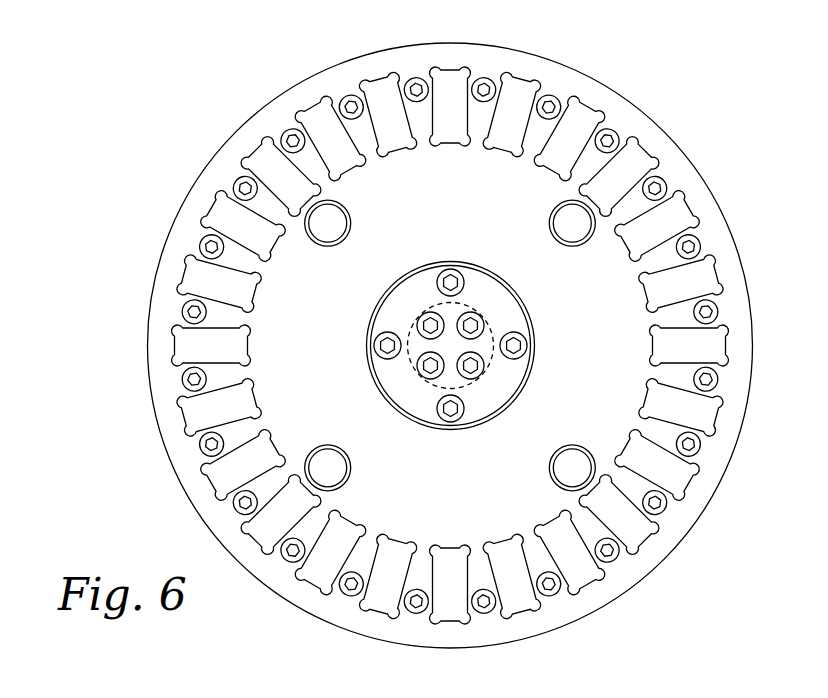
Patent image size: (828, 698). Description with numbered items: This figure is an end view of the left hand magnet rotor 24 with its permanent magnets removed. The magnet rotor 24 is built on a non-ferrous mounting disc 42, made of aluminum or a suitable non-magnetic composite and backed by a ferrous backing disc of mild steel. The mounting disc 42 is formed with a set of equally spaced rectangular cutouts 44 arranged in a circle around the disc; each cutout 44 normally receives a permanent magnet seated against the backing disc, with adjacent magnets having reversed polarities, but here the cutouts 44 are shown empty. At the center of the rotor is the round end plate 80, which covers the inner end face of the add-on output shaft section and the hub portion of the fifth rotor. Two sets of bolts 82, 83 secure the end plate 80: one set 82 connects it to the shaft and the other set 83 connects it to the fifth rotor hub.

The magnet rotor 24 is at (156, 249).
The mounting disc 42 is at (335, 78).
The rectangular cutout 44 is at (280, 165).
The round end plate 80 is at (412, 398).
The set of bolts 82 is at (476, 324).
The set of bolts 83 is at (452, 280).